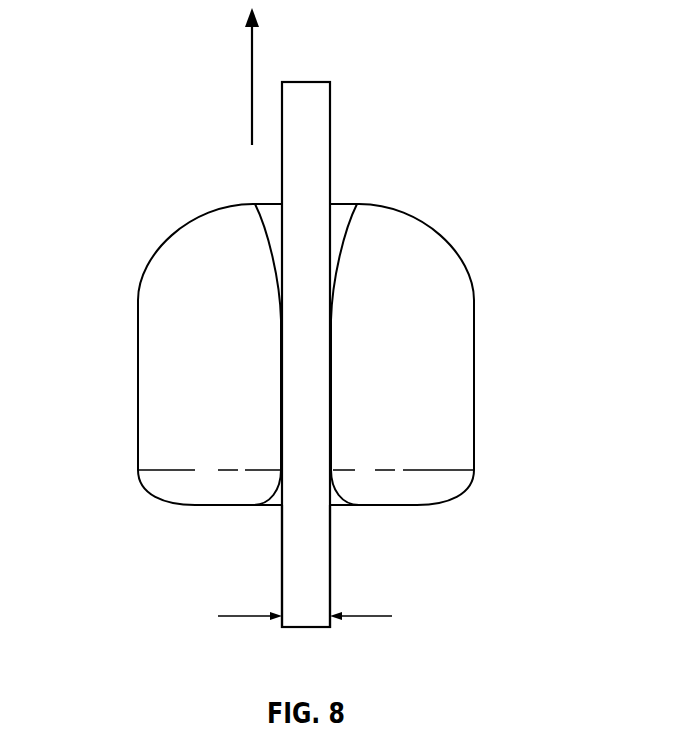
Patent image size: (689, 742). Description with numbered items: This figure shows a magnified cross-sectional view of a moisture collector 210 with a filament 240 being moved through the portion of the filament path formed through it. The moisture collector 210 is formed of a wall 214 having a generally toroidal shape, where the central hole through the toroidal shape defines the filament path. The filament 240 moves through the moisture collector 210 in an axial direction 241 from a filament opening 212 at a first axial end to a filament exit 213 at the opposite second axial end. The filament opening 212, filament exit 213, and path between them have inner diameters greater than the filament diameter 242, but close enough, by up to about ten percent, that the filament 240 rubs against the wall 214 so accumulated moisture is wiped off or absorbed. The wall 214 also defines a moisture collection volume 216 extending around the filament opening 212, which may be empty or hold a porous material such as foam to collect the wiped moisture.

The moisture collector 210 is at (133, 142).
The filament opening 212 is at (268, 513).
The filament exit 213 is at (341, 172).
The wall 214 is at (455, 288).
The moisture collection volume 216 is at (197, 290).
The filament 240 is at (332, 577).
The axial direction 241 is at (252, 75).
The filament diameter 242 is at (245, 618).